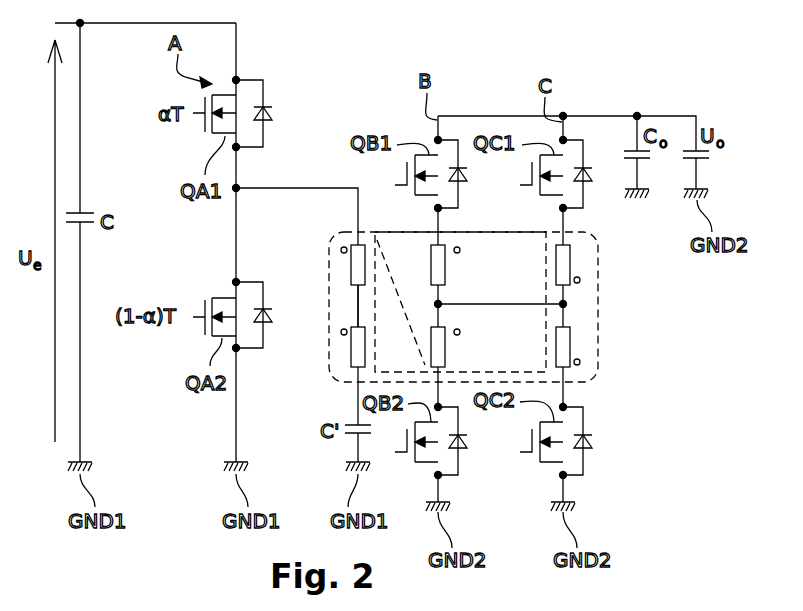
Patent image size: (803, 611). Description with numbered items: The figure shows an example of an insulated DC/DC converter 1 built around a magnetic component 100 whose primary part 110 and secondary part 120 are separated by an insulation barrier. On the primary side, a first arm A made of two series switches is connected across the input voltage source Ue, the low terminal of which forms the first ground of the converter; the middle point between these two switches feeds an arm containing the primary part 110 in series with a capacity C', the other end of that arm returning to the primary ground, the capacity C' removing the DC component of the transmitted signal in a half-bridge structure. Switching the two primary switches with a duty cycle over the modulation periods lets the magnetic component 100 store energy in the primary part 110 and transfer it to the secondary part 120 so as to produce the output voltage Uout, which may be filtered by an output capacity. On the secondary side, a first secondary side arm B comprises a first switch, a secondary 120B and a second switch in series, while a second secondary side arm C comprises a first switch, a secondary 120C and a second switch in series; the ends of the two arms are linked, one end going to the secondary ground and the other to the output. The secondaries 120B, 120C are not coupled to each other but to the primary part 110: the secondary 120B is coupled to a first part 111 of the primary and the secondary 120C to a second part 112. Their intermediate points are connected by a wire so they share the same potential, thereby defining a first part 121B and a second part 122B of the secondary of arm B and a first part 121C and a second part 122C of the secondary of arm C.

The insulated DC/DC converter 1 is at (372, 90).
The magnetic component 100 is at (597, 328).
The primary part 110 is at (338, 260).
The first part of the primary part 111 is at (353, 270).
The second part of the primary part 112 is at (352, 355).
The secondary part 120 is at (585, 264).
The secondary of the first secondary side arm B 120B is at (458, 291).
The secondary of the second secondary side arm C 120C is at (583, 294).
The first part of the secondary of arm B 121B is at (437, 278).
The first part of the secondary of arm C 121C is at (567, 250).
The second part of the secondary of arm B 122B is at (437, 360).
The second part of the secondary of arm C 122C is at (567, 345).